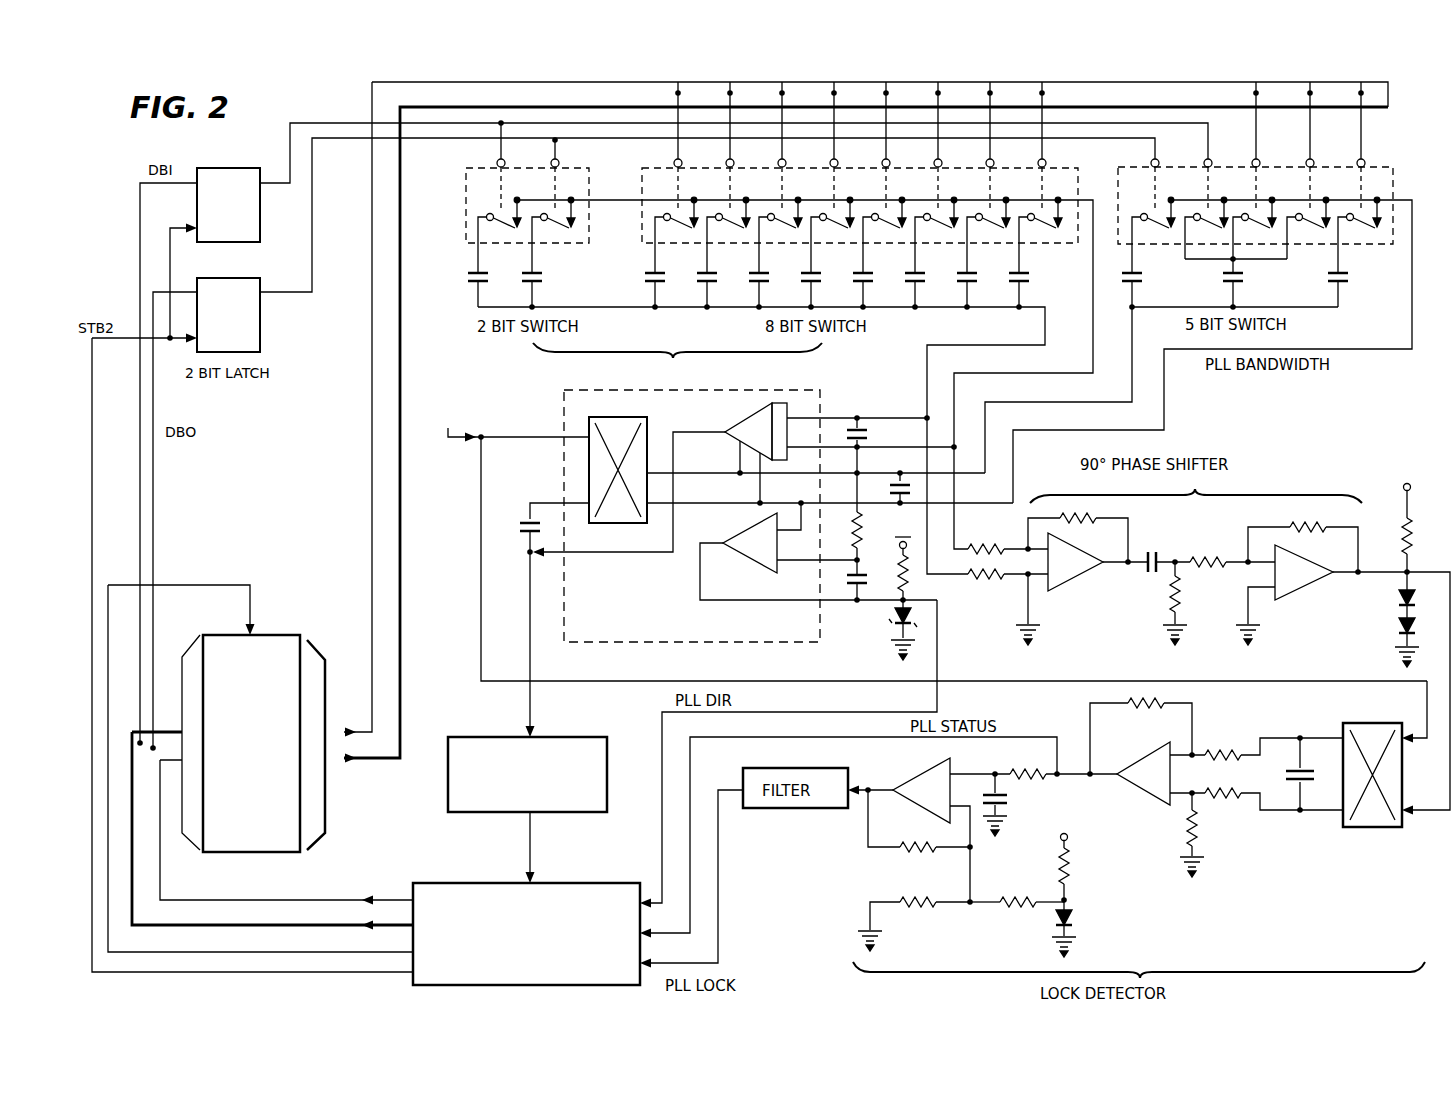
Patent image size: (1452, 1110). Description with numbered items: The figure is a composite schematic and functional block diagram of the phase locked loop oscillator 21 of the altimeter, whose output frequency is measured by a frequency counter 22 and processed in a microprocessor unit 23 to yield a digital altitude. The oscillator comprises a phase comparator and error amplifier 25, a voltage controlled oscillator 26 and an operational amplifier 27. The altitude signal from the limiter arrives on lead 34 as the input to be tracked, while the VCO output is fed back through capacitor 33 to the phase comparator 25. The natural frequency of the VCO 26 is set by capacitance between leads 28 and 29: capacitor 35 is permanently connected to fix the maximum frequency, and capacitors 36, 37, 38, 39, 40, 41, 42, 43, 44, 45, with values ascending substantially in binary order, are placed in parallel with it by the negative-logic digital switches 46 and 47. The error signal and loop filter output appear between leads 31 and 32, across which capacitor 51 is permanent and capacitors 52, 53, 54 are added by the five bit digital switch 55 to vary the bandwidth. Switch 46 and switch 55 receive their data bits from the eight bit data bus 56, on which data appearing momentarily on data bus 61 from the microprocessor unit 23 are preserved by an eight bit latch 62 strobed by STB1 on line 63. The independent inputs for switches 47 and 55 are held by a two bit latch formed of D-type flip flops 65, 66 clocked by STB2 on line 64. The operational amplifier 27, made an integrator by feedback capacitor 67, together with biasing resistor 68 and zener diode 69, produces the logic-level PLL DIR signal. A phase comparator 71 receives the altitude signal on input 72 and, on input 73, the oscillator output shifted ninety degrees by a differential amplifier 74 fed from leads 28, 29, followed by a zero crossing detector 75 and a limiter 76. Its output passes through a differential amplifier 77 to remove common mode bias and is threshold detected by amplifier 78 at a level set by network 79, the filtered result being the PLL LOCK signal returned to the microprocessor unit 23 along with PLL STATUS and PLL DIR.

The phase locked loop oscillator 21 is at (790, 390).
The frequency counter 22 is at (567, 737).
The microprocessor unit 23 is at (580, 883).
The phase comparator and error amplifier 25 is at (600, 418).
The voltage controlled oscillator 26 is at (748, 414).
The operational amplifier 27 is at (744, 534).
The lead 28 is at (827, 417).
The lead 29 is at (827, 447).
The lead 31 is at (782, 475).
The lead 32 is at (773, 504).
The capacitor 33 is at (525, 519).
The lead 34 is at (521, 439).
The capacitor 35 is at (867, 428).
The capacitor 36 is at (1022, 284).
The capacitor 37 is at (970, 284).
The capacitor 38 is at (918, 284).
The capacitor 39 is at (866, 284).
The capacitor 40 is at (814, 284).
The capacitor 41 is at (762, 284).
The capacitor 42 is at (710, 284).
The capacitor 43 is at (658, 284).
The capacitor 44 is at (535, 284).
The capacitor 45 is at (481, 284).
The digital switch 46 is at (641, 218).
The digital switch 47 is at (465, 215).
The capacitor 51 is at (894, 483).
The capacitor 52 is at (1341, 284).
The capacitor 53 is at (1236, 284).
The capacitor 54 is at (1135, 284).
The 5 bit digital switch 55 is at (1393, 186).
The 8 bit data bus 56 is at (1125, 82).
The data bus 61 is at (392, 898).
The 8 bit latch 62 is at (284, 635).
The line 63 is at (205, 952).
The line 64 is at (205, 972).
The D-type flip flop 65 is at (262, 344).
The D-type flip flop 66 is at (262, 237).
The feedback capacitor 67 is at (853, 585).
The biasing resistor 68 is at (912, 578).
The zener diode 69 is at (893, 628).
The phase comparator 71 is at (1376, 830).
The input 72 is at (1425, 703).
The input 73 is at (1448, 750).
The differential amplifier 74 is at (1067, 582).
The zero crossing detector 75 is at (1300, 589).
The limiter 76 is at (1409, 547).
The differential amplifier 77 is at (1143, 758).
The amplifier 78 is at (925, 778).
The network 79 is at (1068, 894).